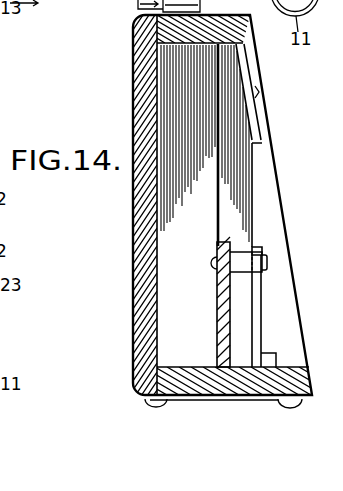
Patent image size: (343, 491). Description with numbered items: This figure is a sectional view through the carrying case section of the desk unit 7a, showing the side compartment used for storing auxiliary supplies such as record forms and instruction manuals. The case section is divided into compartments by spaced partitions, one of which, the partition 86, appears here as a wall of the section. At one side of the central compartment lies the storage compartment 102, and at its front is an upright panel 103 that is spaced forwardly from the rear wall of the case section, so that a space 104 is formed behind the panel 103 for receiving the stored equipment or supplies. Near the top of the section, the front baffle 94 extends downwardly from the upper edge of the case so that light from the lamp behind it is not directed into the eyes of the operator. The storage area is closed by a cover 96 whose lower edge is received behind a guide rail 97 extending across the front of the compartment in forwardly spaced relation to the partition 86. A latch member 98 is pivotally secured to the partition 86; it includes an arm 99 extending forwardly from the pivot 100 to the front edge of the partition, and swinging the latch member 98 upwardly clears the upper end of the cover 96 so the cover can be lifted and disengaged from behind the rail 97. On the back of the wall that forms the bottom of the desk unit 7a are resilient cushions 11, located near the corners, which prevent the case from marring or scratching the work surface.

The desk unit 7a is at (136, 342).
The resilient cushions 11 is at (150, 400).
The partition 86 is at (245, 188).
The front baffle 94 is at (252, 118).
The cover 96 is at (257, 311).
The guide rail 97 is at (277, 353).
The latch member 98 is at (268, 263).
The arm 99 is at (263, 252).
The pivot 100 is at (210, 263).
The storage compartment 102 is at (167, 233).
The upright panel 103 is at (217, 331).
The space 104 is at (167, 288).